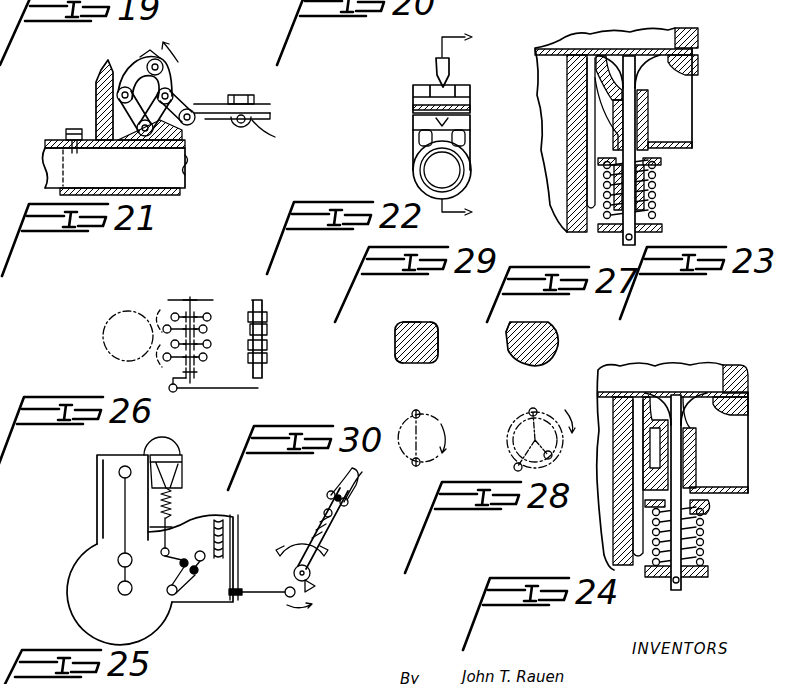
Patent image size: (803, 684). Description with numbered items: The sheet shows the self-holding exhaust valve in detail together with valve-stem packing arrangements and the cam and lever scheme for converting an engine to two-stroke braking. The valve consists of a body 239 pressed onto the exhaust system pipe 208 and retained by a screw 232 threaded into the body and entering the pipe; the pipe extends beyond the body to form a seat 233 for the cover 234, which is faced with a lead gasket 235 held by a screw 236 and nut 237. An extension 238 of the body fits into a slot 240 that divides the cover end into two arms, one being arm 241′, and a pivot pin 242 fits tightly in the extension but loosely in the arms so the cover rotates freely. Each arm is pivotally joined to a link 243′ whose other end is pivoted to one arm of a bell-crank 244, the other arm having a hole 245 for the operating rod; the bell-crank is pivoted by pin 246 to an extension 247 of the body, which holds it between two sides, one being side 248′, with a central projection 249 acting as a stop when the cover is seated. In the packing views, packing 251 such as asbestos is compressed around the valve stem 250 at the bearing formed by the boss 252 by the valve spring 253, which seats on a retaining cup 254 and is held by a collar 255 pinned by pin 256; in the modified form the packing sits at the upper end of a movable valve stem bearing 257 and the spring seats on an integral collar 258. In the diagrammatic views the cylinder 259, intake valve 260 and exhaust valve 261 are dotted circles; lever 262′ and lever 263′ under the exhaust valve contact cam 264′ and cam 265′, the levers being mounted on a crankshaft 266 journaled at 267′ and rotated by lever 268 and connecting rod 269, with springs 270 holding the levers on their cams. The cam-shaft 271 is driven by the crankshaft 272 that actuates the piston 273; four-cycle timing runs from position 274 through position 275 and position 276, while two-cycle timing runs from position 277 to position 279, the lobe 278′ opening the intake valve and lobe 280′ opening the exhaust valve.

In FIG. 21, the exhaust system pipe 208 is at (41, 182).
In FIG. 21, the screw 232 is at (66, 131).
In FIG. 21, the seat 233 is at (190, 162).
In FIG. 21, the cover 234 is at (270, 108).
In FIG. 21, the gasket 235 is at (270, 117).
In FIG. 21, the screw 236 is at (279, 133).
In FIG. 21, the nut 237 is at (256, 99).
In FIG. 21, the extension 238 is at (182, 132).
In FIG. 22, the extension 238 is at (456, 140).
In FIG. 21, the body 239 is at (165, 178).
In FIG. 21, the slot 240 is at (207, 118).
In FIG. 21, the arm 241′ is at (261, 98).
In FIG. 22, the arm 241′ is at (414, 89).
In FIG. 21, the pivot pin 242 is at (188, 90).
In FIG. 21, the link 243′ is at (176, 74).
In FIG. 22, the link 243′ is at (433, 83).
In FIG. 21, the bell-crank 244 is at (143, 75).
In FIG. 21, the hole 245 is at (149, 50).
In FIG. 21, the pivot pin 246 is at (117, 98).
In FIG. 21, the extension 247 is at (96, 118).
In FIG. 22, the side 248′ is at (418, 142).
In FIG. 21, the central projection 249 is at (98, 74).
In FIG. 23, the valve stem 250 is at (626, 247).
In FIG. 23, the packing material 251 is at (622, 178).
In FIG. 24, the packing material 251 is at (698, 446).
In FIG. 23, the boss 252 is at (660, 156).
In FIG. 24, the boss 252 is at (697, 478).
In FIG. 23, the valve spring 253 is at (656, 201).
In FIG. 24, the valve spring 253 is at (706, 547).
In FIG. 23, the retaining cup 254 is at (661, 164).
In FIG. 23, the collar 255 is at (662, 226).
In FIG. 23, the pin 256 is at (636, 238).
In FIG. 24, the valve stem bearing 257 is at (696, 462).
In FIG. 24, the collar 258 is at (708, 513).
In FIG. 26, the cylinder 259 is at (112, 312).
In FIG. 26, the cylinder intake valve 260 is at (162, 309).
In FIG. 26, the cylinder exhaust valve 261 is at (158, 360).
In FIG. 26, the lever 262′ is at (228, 343).
In FIG. 26, the lever 263′ is at (210, 360).
In FIG. 26, the cam 264′ is at (268, 345).
In FIG. 29, the cam 264′ is at (438, 336).
In FIG. 26, the cam 265′ is at (268, 358).
In FIG. 27, the cam 265′ is at (559, 332).
In FIG. 26, the crankshaft 266 is at (195, 300).
In FIG. 26, the journal 267′ is at (192, 279).
In FIG. 25, the lever 268 is at (322, 520).
In FIG. 25, the connecting rod 269 is at (250, 594).
In FIG. 25, the springs 270 is at (233, 517).
In FIG. 26, the cam-shaft 271 is at (263, 372).
In FIG. 25, the cam-shaft 271 is at (221, 512).
In FIG. 25, the crankshaft 272 is at (128, 596).
In FIG. 25, the cylinder piston 273 is at (100, 478).
In FIG. 28, the position 274 is at (532, 409).
In FIG. 28, the position 275 is at (516, 467).
In FIG. 28, the position 276 is at (553, 456).
In FIG. 30, the position 277 is at (420, 413).
In FIG. 29, the lobe 278′ is at (398, 322).
In FIG. 30, the position 279 is at (421, 462).
In FIG. 29, the lobe 280′ is at (398, 363).